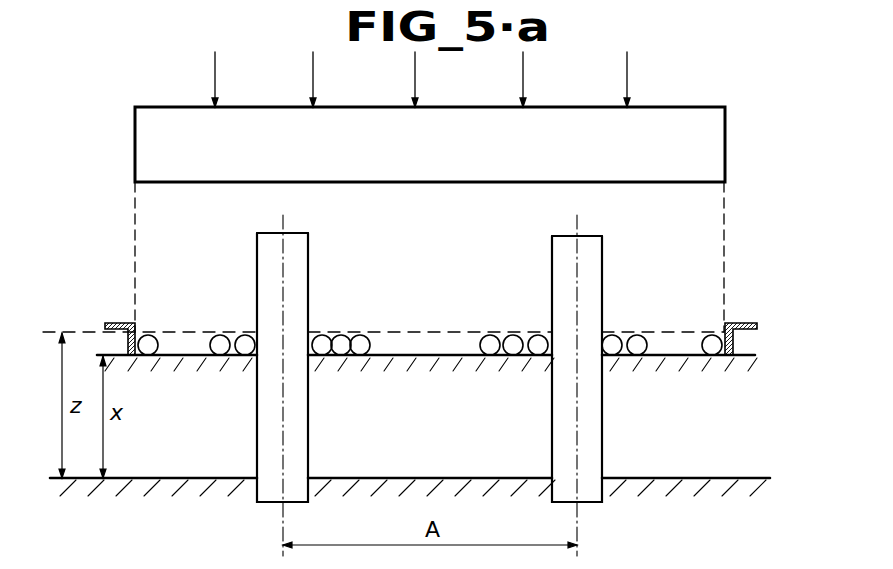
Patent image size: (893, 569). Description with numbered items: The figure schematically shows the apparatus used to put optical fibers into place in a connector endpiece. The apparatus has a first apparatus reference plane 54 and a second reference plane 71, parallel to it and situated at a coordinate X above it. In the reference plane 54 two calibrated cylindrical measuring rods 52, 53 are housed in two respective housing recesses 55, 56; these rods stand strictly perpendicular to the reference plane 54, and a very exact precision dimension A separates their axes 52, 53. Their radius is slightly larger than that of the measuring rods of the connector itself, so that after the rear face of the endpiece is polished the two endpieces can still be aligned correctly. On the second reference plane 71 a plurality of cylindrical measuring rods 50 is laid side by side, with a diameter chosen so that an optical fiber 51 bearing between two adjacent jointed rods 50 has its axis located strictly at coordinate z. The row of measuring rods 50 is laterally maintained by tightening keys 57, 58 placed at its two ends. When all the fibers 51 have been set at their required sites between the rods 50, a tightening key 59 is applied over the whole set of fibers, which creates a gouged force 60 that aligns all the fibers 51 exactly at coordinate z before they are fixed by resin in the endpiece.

The cylindrical measuring rods 50 is at (153, 336).
The optical fibers 51 is at (155, 337).
The measuring rod 52 is at (298, 224).
The measuring rod 53 is at (563, 235).
The first apparatus reference plane 54 is at (156, 453).
The housing recess 55 is at (285, 386).
The housing recess 56 is at (572, 383).
The tightening key 57 is at (757, 323).
The tightening key 58 is at (113, 322).
The tightening key 59 is at (712, 146).
The gouged force 60 is at (522, 75).
The second reference plane 71 is at (178, 362).